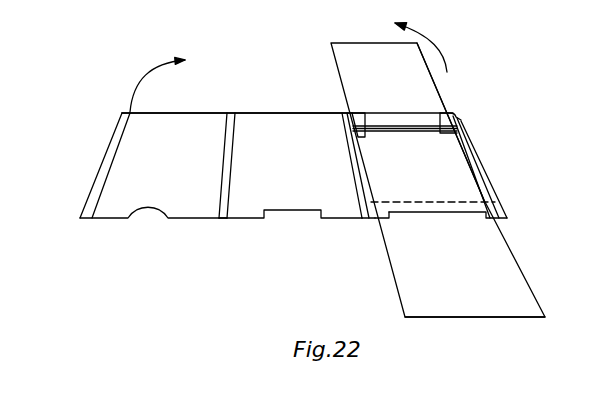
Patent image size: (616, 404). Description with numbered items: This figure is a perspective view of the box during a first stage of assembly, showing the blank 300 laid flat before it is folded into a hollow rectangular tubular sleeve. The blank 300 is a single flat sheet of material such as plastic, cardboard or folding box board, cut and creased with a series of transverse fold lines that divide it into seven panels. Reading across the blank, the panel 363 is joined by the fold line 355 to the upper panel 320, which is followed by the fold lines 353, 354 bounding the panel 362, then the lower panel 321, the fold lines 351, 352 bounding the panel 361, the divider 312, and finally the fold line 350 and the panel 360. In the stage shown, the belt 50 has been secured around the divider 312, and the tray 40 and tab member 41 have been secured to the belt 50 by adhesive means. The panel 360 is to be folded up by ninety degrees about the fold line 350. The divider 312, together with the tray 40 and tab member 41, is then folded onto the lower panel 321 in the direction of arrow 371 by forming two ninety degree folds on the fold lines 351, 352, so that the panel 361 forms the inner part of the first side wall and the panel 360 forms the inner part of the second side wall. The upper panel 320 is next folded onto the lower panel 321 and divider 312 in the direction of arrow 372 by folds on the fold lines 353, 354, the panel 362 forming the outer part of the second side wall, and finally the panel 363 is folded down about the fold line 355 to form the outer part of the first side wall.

The blank 300 is at (222, 100).
The lower panel 321 is at (275, 125).
The panel 363 is at (90, 210).
The fold line 355 is at (110, 167).
The upper panel 320 is at (115, 212).
The fold line 354 is at (222, 190).
The fold line 353 is at (232, 190).
The panel 362 is at (222, 210).
The fold line 352 is at (362, 186).
The fold line 351 is at (363, 202).
The panel 361 is at (370, 214).
The belt 50 is at (443, 213).
The tray 40 is at (433, 98).
The tab member 41 is at (525, 302).
The divider 312 is at (466, 157).
The fold line 350 is at (490, 183).
The panel 360 is at (503, 203).
The arrow 371 is at (437, 45).
The arrow 372 is at (143, 78).